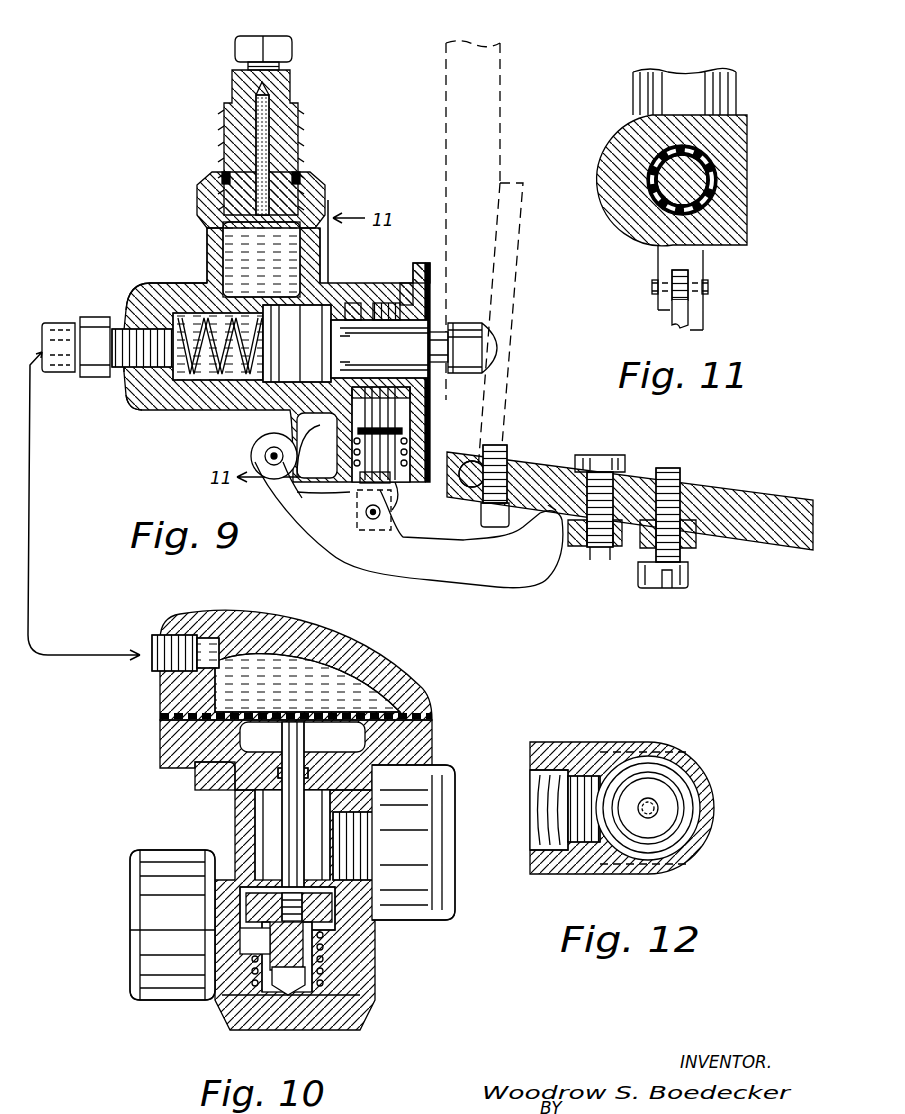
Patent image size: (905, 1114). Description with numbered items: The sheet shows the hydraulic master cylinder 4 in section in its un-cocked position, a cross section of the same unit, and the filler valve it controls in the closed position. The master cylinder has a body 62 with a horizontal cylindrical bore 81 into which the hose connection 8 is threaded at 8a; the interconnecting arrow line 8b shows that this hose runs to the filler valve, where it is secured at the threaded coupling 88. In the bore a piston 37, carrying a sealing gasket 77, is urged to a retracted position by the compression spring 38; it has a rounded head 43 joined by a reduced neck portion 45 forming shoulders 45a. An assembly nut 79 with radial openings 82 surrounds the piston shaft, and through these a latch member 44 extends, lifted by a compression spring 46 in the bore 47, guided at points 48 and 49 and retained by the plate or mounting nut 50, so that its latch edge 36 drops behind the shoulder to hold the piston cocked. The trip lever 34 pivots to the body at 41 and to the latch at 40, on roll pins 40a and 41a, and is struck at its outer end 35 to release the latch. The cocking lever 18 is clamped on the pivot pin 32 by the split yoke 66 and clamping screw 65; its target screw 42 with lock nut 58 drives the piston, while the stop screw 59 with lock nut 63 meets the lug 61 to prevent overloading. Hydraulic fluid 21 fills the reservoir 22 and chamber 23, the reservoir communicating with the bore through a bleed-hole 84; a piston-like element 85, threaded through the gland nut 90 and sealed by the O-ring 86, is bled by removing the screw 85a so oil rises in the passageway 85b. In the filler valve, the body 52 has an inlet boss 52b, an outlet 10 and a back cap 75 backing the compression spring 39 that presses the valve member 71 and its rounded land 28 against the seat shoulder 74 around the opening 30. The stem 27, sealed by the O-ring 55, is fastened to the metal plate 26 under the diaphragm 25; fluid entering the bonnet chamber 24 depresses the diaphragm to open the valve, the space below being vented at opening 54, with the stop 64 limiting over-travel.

In FIG. 9, the hydraulic master cylinder 4 is at (121, 383).
In FIG. 9, the hydraulic hose connection 8 is at (70, 365).
In FIG. 9, the threaded connection 8a is at (127, 312).
In FIG. 9, the interconnecting arrow line 8b is at (38, 538).
In FIG. 10, the outlet of the valve 10 is at (438, 832).
In FIG. 9, the cocking lever 18 is at (790, 498).
In FIG. 9, the hydraulic fluid 21 is at (245, 240).
In FIG. 10, the hydraulic fluid 21 is at (330, 690).
In FIG. 9, the reservoir 22 is at (222, 262).
In FIG. 9, the chamber 23 is at (165, 402).
In FIG. 10, the bonnet chamber 24 is at (292, 672).
In FIG. 10, the diaphragm 25 is at (410, 705).
In FIG. 10, the metal plate 26 is at (437, 735).
In FIG. 10, the stem 27 is at (288, 800).
In FIG. 12, the stem 27 is at (645, 815).
In FIG. 10, the rounded land 28 is at (330, 900).
In FIG. 10, the opening 30 is at (262, 848).
In FIG. 9, the pivot pin 32 is at (480, 470).
In FIG. 9, the trip lever 34 is at (503, 567).
In FIG. 11, the trip lever 34 is at (682, 315).
In FIG. 9, the outer end of trip lever 35 is at (537, 577).
In FIG. 9, the latch edge 36 is at (317, 445).
In FIG. 9, the piston 37 is at (283, 370).
In FIG. 11, the piston 37 is at (700, 178).
In FIG. 9, the compression spring 38 is at (150, 283).
In FIG. 10, the compression spring 39 is at (333, 950).
In FIG. 9, the pivot 40 is at (368, 520).
In FIG. 9, the roll pin 40a is at (358, 528).
In FIG. 9, the pivot 41 is at (264, 457).
In FIG. 11, the pivot 41 is at (708, 287).
In FIG. 9, the roll pin 41a is at (310, 486).
In FIG. 9, the adjustable target screw 42 is at (595, 548).
In FIG. 9, the head 43 is at (497, 348).
In FIG. 9, the latch member 44 is at (400, 405).
In FIG. 9, the reduced neck portion 45 is at (440, 335).
In FIG. 9, the shoulders 45a is at (436, 352).
In FIG. 9, the compression spring 46 is at (404, 478).
In FIG. 9, the bore 47 is at (412, 440).
In FIG. 9, the guide point 48 is at (309, 451).
In FIG. 9, the guide point 49 is at (366, 485).
In FIG. 9, the mounting nut 50 is at (380, 482).
In FIG. 10, the body 52 is at (148, 1001).
In FIG. 12, the body 52 is at (598, 740).
In FIG. 10, the inlet boss 52b is at (135, 960).
In FIG. 10, the opening 54 is at (215, 770).
In FIG. 10, the O-ring 55 is at (285, 775).
In FIG. 9, the lock nut 58 is at (625, 528).
In FIG. 9, the stop screw 59 is at (670, 588).
In FIG. 9, the lug 61 is at (432, 268).
In FIG. 9, the body 62 is at (168, 283).
In FIG. 11, the body 62 is at (730, 231).
In FIG. 9, the lock nut 63 is at (690, 540).
In FIG. 10, the stop 64 is at (325, 758).
In FIG. 9, the clamping screw 65 is at (490, 527).
In FIG. 9, the split yoke 66 is at (585, 462).
In FIG. 10, the valve member 71 is at (332, 915).
In FIG. 12, the valve member 71 is at (684, 800).
In FIG. 10, the shoulder 74 is at (340, 890).
In FIG. 12, the shoulder 74 is at (584, 809).
In FIG. 10, the back cap 75 is at (345, 1010).
In FIG. 12, the back cap 75 is at (700, 780).
In FIG. 9, the sealing gasket 77 is at (348, 318).
In FIG. 11, the sealing gasket 77 is at (712, 158).
In FIG. 9, the assembly nut 79 is at (415, 283).
In FIG. 9, the cylindrical bore 81 is at (178, 400).
In FIG. 9, the radial openings 82 is at (386, 303).
In FIG. 9, the bleed-hole 84 is at (254, 343).
In FIG. 9, the piston-like element 85 is at (288, 113).
In FIG. 9, the screw 85a is at (290, 52).
In FIG. 9, the passageway 85b is at (270, 145).
In FIG. 9, the O-ring 86 is at (210, 200).
In FIG. 10, the threaded coupling 88 is at (160, 640).
In FIG. 9, the gland nut 90 is at (225, 172).